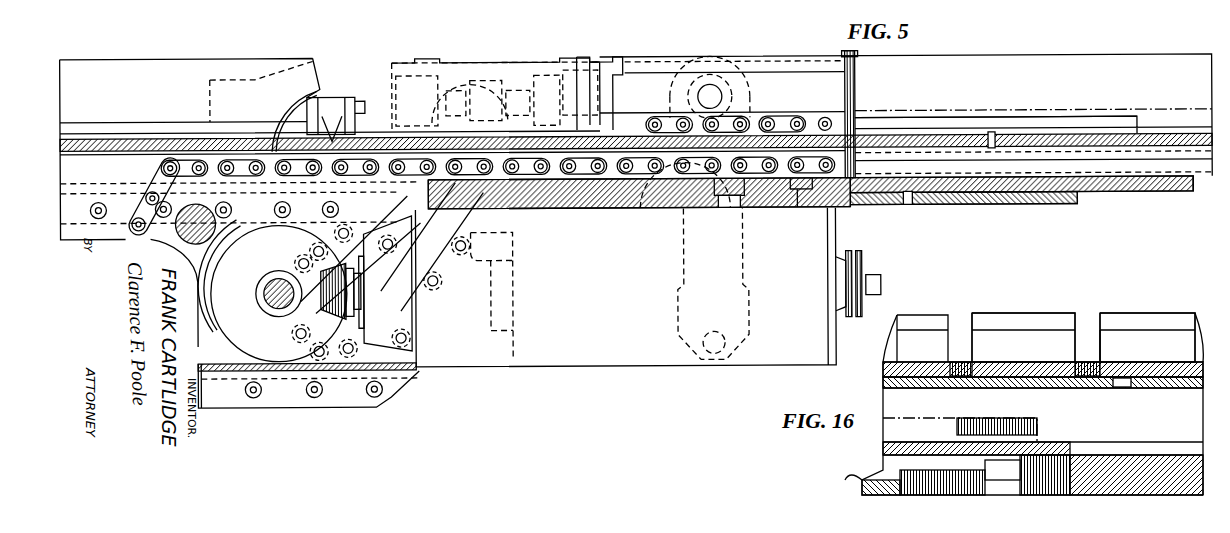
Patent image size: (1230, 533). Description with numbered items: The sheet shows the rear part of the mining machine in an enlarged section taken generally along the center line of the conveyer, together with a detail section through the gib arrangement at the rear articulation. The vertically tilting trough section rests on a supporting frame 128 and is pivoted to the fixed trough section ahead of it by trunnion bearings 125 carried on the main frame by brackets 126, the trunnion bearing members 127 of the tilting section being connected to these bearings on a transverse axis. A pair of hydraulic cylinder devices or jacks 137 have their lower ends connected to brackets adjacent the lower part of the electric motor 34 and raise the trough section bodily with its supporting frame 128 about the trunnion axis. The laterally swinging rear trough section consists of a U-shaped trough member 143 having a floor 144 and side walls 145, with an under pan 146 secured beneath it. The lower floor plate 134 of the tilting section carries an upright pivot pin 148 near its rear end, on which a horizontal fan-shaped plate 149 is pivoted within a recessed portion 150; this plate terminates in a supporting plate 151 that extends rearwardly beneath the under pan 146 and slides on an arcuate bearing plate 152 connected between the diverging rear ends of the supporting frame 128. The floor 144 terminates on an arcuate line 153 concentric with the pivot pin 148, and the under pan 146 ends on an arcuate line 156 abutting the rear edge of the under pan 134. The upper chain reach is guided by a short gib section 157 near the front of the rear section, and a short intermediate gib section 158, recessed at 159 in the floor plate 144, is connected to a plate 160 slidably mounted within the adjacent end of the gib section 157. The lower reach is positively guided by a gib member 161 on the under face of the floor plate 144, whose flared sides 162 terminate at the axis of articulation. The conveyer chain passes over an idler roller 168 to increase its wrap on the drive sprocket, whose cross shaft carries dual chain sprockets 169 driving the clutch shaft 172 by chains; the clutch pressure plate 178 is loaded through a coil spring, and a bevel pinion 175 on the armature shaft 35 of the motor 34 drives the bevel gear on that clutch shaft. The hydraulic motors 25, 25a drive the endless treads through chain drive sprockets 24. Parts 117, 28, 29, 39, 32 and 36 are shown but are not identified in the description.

In FIG. 5, the housing 117 is at (142, 76).
In FIG. 5, the bracket 126 is at (257, 80).
In FIG. 5, the trunnion bearing 125 is at (331, 120).
In FIG. 5, the trunnion bearing member 127 is at (350, 100).
In FIG. 5, the dual chain sprockets 169 is at (488, 86).
In FIG. 5, the hydraulic motor 25 is at (455, 75).
In FIG. 5, the sprocket 28 is at (483, 80).
In FIG. 5, the gear 29 is at (520, 85).
In FIG. 5, the chain drive sprocket 24 is at (417, 400).
In FIG. 5, the hydraulic motor 25a is at (600, 70).
In FIG. 5, the roller 39 is at (735, 68).
In FIG. 5, the U-shaped trough member 143 is at (1089, 49).
In FIG. 5, the side wall 145 is at (1010, 70).
In FIG. 5, the gib section 157 is at (950, 118).
In FIG. 16, the gib section 157 is at (1165, 312).
In FIG. 5, the arcuate line 153 is at (992, 150).
In FIG. 5, the floor plate 144 is at (1000, 150).
In FIG. 16, the floor plate 144 is at (962, 392).
In FIG. 5, the under pan 146 is at (1170, 178).
In FIG. 16, the under pan 146 is at (1188, 442).
In FIG. 5, the arcuate bearing plate 152 is at (1038, 207).
In FIG. 5, the supporting plate 151 is at (1180, 205).
In FIG. 5, the fan-shaped plate 149 is at (845, 208).
In FIG. 16, the fan-shaped plate 149 is at (770, 486).
In FIG. 5, the lower floor plate 134 is at (578, 212).
In FIG. 5, the recessed portion 150 is at (723, 212).
In FIG. 16, the recessed portion 150 is at (920, 490).
In FIG. 5, the arcuate line 156 is at (653, 212).
In FIG. 5, the pivot pin 148 is at (797, 208).
In FIG. 16, the pivot pin 148 is at (1010, 460).
In FIG. 5, the idler roller 168 is at (155, 186).
In FIG. 5, the clutch shaft 172 is at (270, 296).
In FIG. 5, the pressure plate 178 is at (278, 343).
In FIG. 5, the bevel pinion 175 is at (336, 367).
In FIG. 5, the gear housing 32 is at (456, 372).
In FIG. 5, the electric motor 34 is at (608, 352).
In FIG. 5, the hydraulic cylinder device 137 is at (742, 261).
In FIG. 5, the supporting frame 128 is at (575, 221).
In FIG. 16, the supporting frame 128 is at (915, 450).
In FIG. 5, the sprocket 36 is at (860, 263).
In FIG. 5, the armature shaft 35 is at (880, 286).
In FIG. 16, the flared side 162 is at (1022, 420).
In FIG. 16, the plate 160 is at (1137, 346).
In FIG. 16, the intermediate gib section 158 is at (1051, 306).
In FIG. 16, the recess 159 is at (1120, 388).
In FIG. 16, the gib member 161 is at (880, 430).